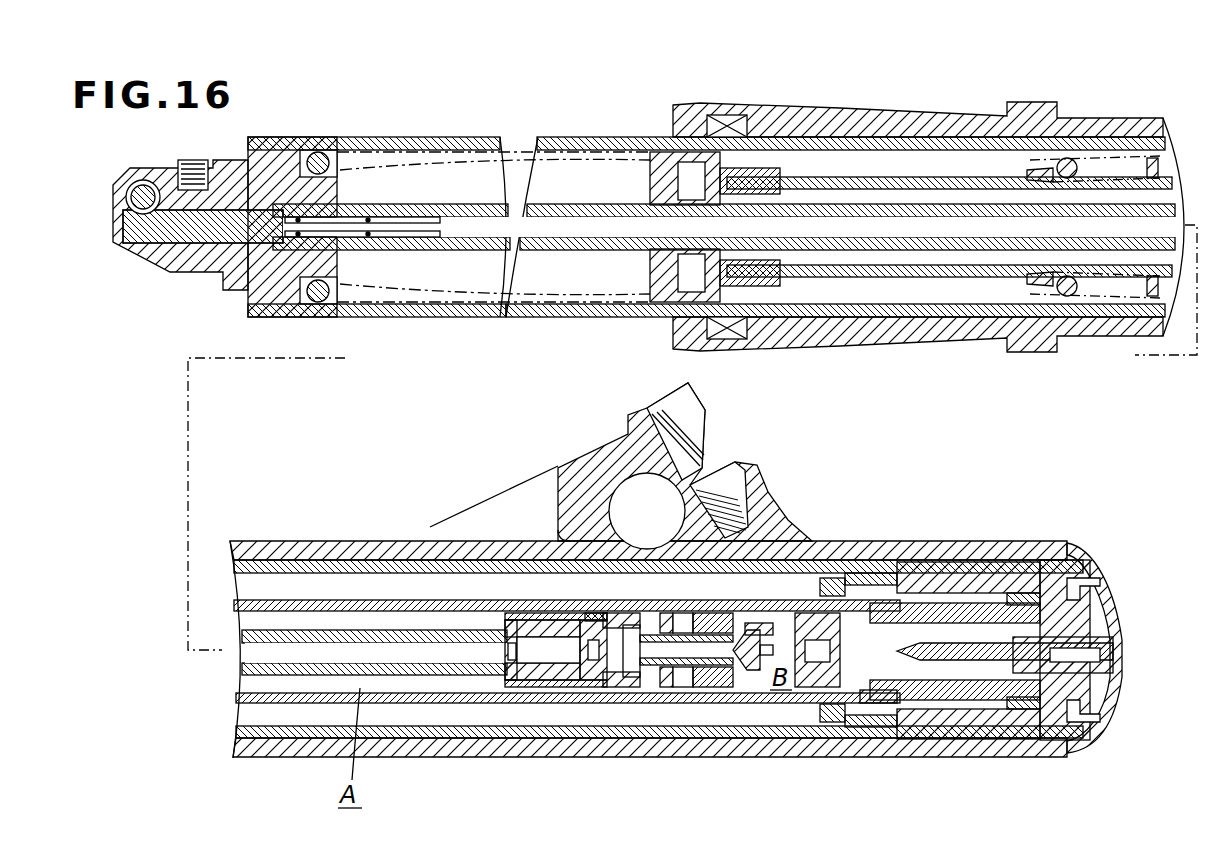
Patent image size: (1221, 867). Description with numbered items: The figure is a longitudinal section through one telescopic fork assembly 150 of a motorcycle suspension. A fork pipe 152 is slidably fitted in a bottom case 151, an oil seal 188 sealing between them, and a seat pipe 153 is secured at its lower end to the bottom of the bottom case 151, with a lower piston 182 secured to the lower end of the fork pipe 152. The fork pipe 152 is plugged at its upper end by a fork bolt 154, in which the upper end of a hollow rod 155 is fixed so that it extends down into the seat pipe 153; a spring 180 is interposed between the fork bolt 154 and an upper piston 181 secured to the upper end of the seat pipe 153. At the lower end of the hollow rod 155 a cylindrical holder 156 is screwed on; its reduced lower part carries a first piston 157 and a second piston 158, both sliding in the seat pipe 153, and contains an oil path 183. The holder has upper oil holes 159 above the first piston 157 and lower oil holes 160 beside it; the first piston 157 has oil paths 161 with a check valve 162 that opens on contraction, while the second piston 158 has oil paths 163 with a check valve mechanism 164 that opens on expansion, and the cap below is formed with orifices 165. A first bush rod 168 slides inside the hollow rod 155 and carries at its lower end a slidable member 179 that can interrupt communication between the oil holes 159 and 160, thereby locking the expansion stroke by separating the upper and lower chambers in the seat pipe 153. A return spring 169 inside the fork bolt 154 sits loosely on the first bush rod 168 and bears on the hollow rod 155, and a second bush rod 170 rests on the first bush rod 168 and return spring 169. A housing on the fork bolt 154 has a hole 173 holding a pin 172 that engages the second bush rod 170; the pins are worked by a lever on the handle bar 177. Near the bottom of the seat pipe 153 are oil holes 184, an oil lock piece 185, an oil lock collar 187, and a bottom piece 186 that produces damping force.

The fork assembly 150 is at (423, 134).
The bottom case 151 is at (940, 114).
The fork pipe 152 is at (572, 137).
The seat pipe 153 is at (1116, 178).
The fork bolt 154 is at (280, 138).
The hollow rod 155 is at (488, 204).
The cylindrical holder 156 is at (510, 678).
The first piston 157 is at (640, 686).
The second piston 158 is at (706, 688).
The upper oil holes 159 is at (575, 620).
The lower oil holes 160 is at (637, 630).
The oil paths 161 is at (676, 625).
The check valve 162 is at (588, 625).
The oil paths 163 is at (712, 628).
The check valve mechanism 164 is at (676, 688).
The orifices 165 is at (757, 686).
The first bush rod 168 is at (480, 250).
The return spring 169 is at (350, 203).
The second bush rod 170 is at (140, 240).
The pin 172 is at (121, 222).
The hole 173 is at (136, 184).
The handle bar 177 is at (170, 172).
The slidable member 179 is at (585, 680).
The spring 180 is at (385, 298).
The upper piston 181 is at (660, 158).
The lower piston 182 is at (850, 562).
The oil path 183 is at (760, 630).
The oil holes 184 is at (887, 718).
The oil lock piece 185 is at (940, 730).
The bottom piece 186 is at (950, 598).
The oil lock collar 187 is at (990, 575).
The oil seal 188 is at (727, 120).